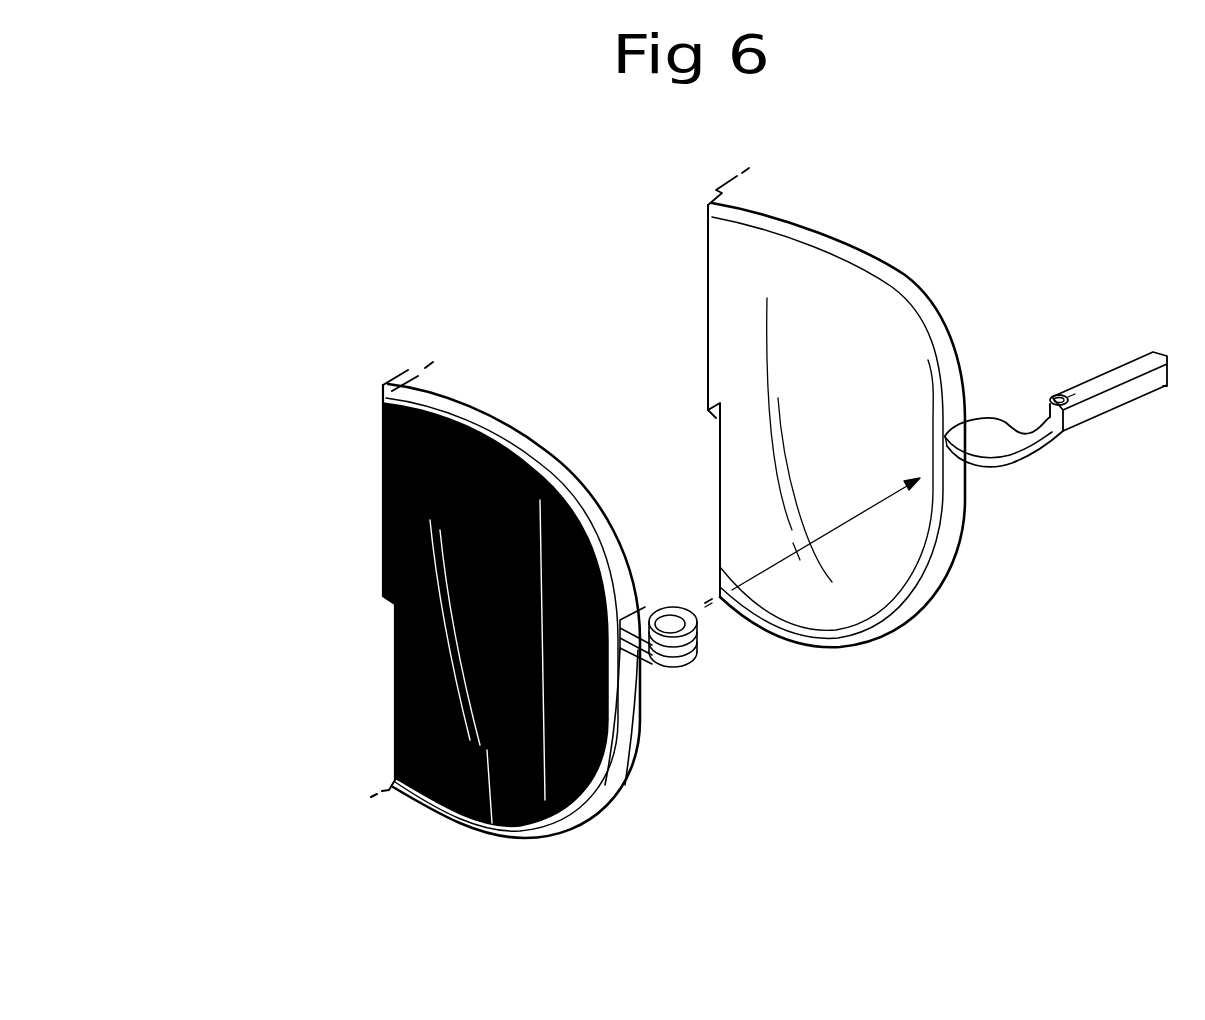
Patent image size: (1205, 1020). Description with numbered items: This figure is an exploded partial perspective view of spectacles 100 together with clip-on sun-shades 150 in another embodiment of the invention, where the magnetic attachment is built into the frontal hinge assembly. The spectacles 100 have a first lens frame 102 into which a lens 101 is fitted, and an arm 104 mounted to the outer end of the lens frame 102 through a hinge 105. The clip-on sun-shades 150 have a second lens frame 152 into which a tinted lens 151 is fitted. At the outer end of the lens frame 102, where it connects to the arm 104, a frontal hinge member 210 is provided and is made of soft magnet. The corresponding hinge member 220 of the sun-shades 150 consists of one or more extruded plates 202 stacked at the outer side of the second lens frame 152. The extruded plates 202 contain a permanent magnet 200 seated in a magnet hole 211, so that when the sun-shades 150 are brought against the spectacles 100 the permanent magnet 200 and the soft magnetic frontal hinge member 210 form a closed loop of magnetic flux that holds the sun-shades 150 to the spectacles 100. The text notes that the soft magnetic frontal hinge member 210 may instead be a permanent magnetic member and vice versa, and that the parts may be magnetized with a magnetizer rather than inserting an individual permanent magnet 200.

The spectacles 100 is at (936, 466).
The lenses 101 is at (868, 612).
The first lens frame 102 is at (950, 566).
The arm 104 is at (1092, 415).
The hinge 105 is at (1072, 372).
The clip-on sun-shades 150 is at (439, 656).
The tinted lens 151 is at (484, 830).
The second lens frame 152 is at (603, 790).
The permanent magnet 200 is at (709, 700).
The extruded plates 202 is at (696, 630).
The frontal hinge member 210 is at (997, 447).
The magnet hole 211 is at (688, 656).
The hinge member 220 is at (674, 596).